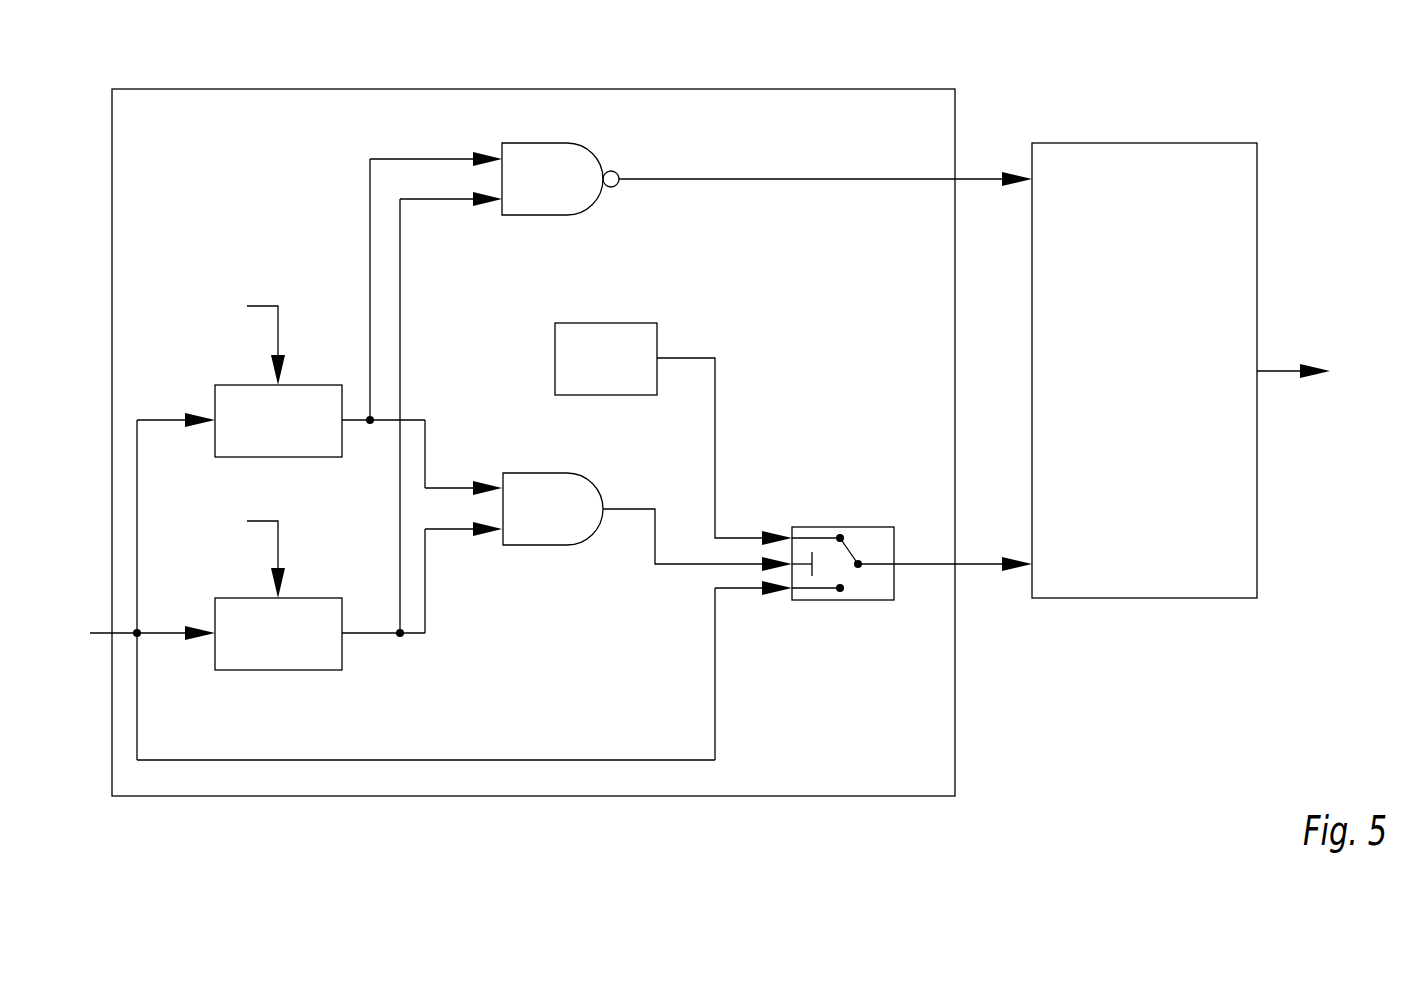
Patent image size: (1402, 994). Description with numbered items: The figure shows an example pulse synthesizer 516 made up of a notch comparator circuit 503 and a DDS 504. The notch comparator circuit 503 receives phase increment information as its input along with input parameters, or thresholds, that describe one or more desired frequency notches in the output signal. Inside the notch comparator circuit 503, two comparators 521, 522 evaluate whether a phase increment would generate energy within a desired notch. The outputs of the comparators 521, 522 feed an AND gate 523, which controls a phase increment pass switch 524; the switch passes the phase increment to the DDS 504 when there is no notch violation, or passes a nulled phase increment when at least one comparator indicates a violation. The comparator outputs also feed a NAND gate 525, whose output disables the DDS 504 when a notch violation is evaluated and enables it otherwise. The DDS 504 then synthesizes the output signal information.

The notch comparator circuit 503 is at (535, 89).
The DDS 504 is at (1147, 143).
The pulse synthesizer 516 is at (1318, 69).
The comparator 521 is at (328, 385).
The comparator 522 is at (328, 598).
The AND gate 523 is at (537, 473).
The phase increment pass switch 524 is at (846, 527).
The NAND gate 525 is at (537, 143).